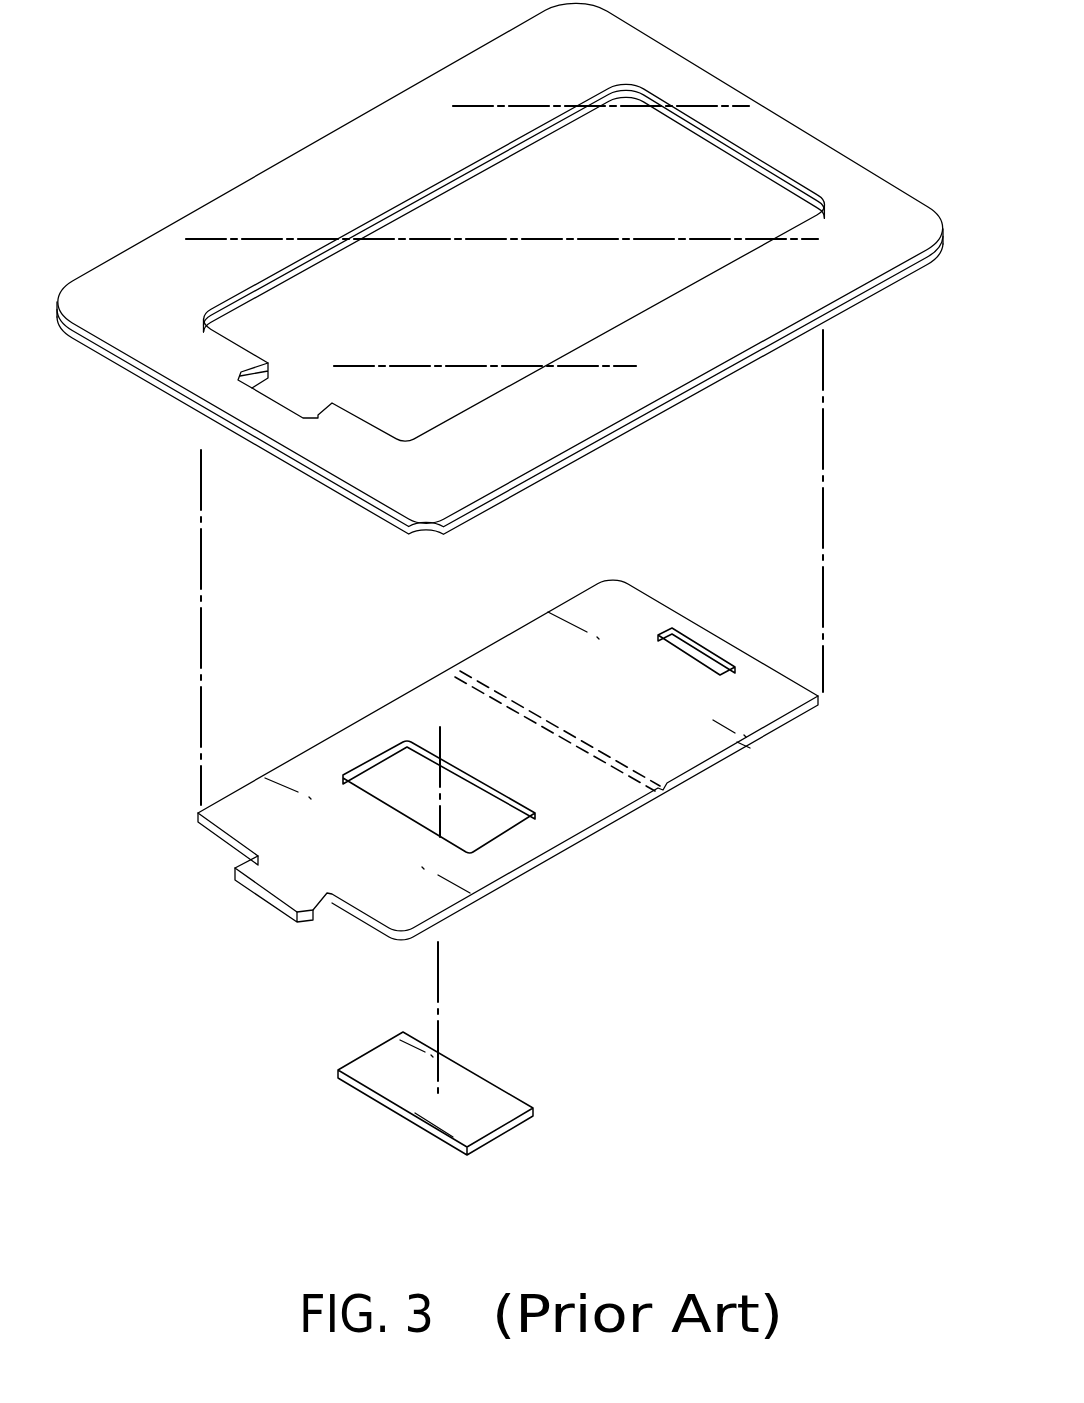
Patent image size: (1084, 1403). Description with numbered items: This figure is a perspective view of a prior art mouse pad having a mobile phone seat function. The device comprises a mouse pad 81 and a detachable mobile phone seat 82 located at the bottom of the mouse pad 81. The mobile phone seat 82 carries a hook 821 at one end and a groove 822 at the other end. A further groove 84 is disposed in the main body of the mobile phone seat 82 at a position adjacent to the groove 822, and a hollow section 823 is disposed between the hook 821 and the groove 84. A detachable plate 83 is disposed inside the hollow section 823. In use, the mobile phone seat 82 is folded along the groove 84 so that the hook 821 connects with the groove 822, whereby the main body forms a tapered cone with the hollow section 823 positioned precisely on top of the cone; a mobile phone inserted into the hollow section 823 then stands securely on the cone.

The mouse pad 81 is at (332, 124).
The mobile phone seat 82 is at (600, 866).
The hook 821 is at (282, 879).
The groove 822 is at (698, 652).
The hollow section 823 is at (385, 773).
The detachable plate 83 is at (490, 1095).
The groove 84 is at (622, 760).